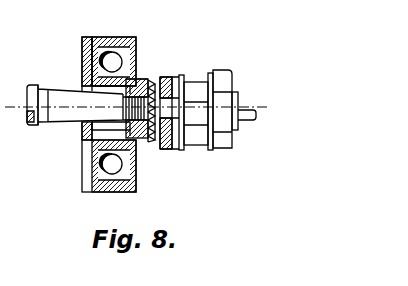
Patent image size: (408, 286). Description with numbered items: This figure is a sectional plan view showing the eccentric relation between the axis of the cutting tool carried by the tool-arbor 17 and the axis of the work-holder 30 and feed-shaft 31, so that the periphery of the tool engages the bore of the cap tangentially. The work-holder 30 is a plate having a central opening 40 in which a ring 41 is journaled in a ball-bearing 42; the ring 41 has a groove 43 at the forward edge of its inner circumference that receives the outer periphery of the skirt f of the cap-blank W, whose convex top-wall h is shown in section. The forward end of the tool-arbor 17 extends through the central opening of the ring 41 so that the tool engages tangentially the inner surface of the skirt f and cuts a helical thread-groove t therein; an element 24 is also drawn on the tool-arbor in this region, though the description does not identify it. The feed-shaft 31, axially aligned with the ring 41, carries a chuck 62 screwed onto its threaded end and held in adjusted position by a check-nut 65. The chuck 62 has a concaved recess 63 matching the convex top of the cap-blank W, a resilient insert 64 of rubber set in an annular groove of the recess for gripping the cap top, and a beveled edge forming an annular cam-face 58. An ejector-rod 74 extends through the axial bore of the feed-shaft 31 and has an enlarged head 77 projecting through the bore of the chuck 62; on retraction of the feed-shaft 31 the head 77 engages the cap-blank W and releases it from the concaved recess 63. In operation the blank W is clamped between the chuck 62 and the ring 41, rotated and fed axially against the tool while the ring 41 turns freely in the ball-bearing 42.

The tool-arbor 17 is at (43, 96).
The central opening 40 is at (112, 57).
The ball-bearing 42 is at (86, 58).
The groove 43 is at (92, 88).
The work-holder 30 is at (108, 192).
The ring 41 is at (82, 147).
The sleeve 24 is at (130, 125).
The helical thread-groove t is at (130, 136).
The head 77 is at (180, 143).
The annular cam-face 58 is at (149, 78).
The skirt f is at (146, 79).
The insert 64 is at (147, 145).
The cap-blank W is at (146, 150).
The concaved recess 63 is at (191, 147).
The chuck 62 is at (180, 77).
The top-wall h is at (156, 119).
The check-nut 65 is at (228, 78).
The feed-shaft 31 is at (234, 101).
The ejector-rod 74 is at (243, 121).